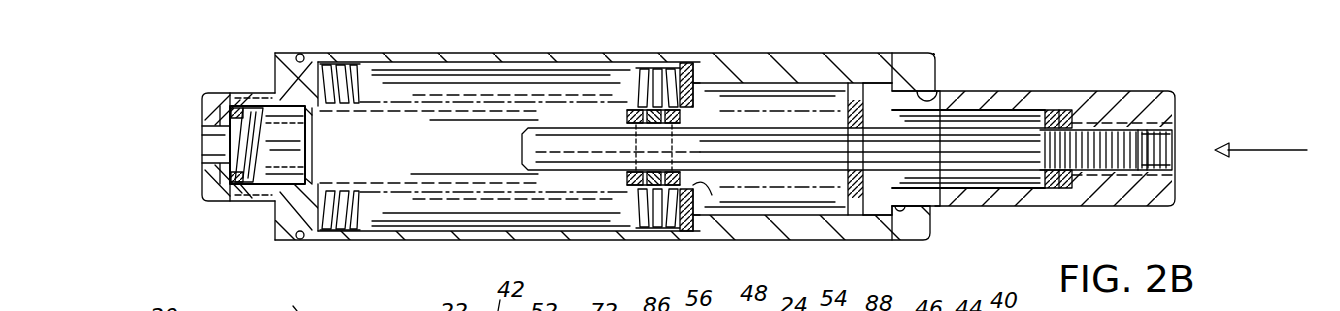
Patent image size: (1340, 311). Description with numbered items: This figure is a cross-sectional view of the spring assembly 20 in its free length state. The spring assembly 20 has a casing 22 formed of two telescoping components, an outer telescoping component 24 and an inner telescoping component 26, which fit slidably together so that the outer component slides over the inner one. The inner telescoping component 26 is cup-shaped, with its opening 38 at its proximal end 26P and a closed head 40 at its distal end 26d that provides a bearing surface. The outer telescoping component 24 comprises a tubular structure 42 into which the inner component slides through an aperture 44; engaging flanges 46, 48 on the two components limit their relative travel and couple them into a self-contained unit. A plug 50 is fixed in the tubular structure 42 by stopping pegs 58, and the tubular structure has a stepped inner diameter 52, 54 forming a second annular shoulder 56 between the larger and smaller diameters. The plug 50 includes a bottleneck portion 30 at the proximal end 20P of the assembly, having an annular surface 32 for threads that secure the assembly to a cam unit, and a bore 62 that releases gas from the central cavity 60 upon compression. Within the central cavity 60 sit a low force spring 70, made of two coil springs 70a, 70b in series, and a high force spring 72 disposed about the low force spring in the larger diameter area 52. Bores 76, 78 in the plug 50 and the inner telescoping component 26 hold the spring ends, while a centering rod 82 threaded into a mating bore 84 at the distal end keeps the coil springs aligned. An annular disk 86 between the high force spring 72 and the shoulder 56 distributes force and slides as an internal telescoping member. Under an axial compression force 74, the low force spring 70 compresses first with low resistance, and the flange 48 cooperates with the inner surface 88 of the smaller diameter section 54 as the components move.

The spring assembly 20 is at (226, 259).
The proximal end of the spring assembly 20P is at (196, 64).
The casing 22 is at (436, 44).
The outer telescoping component 24 is at (797, 56).
The inner telescoping component 26 is at (1093, 96).
The proximal end of the inner telescoping component 26P is at (876, 72).
The distal end of the inner telescoping component 26d is at (1181, 83).
The bottleneck portion 30 is at (216, 190).
The annular surface 32 is at (215, 92).
The opening 38 is at (881, 208).
The closed head 40 is at (1141, 96).
The tubular structure 42 is at (477, 58).
The aperture 44 is at (938, 95).
The flange 46 is at (908, 80).
The flange 48 is at (908, 242).
The plug 50 is at (283, 73).
The second inner diameter 52 is at (520, 82).
The third inner diameter 54 is at (752, 103).
The second annular shoulder 56 is at (700, 70).
The stopping pegs 58 is at (298, 54).
The central cavity 60 is at (386, 175).
The bore 62 is at (208, 147).
The low force spring 70 is at (693, 187).
The coil spring 70a is at (628, 187).
The coil spring 70b is at (650, 118).
The high force spring 72 is at (648, 78).
The axial compression force 74 is at (1268, 150).
The bore 76 is at (264, 178).
The bore 78 is at (1026, 199).
The centering rod 82 is at (780, 160).
The bore 84 is at (1150, 152).
The annular disk 86 is at (688, 70).
The inner surface 88 is at (826, 92).